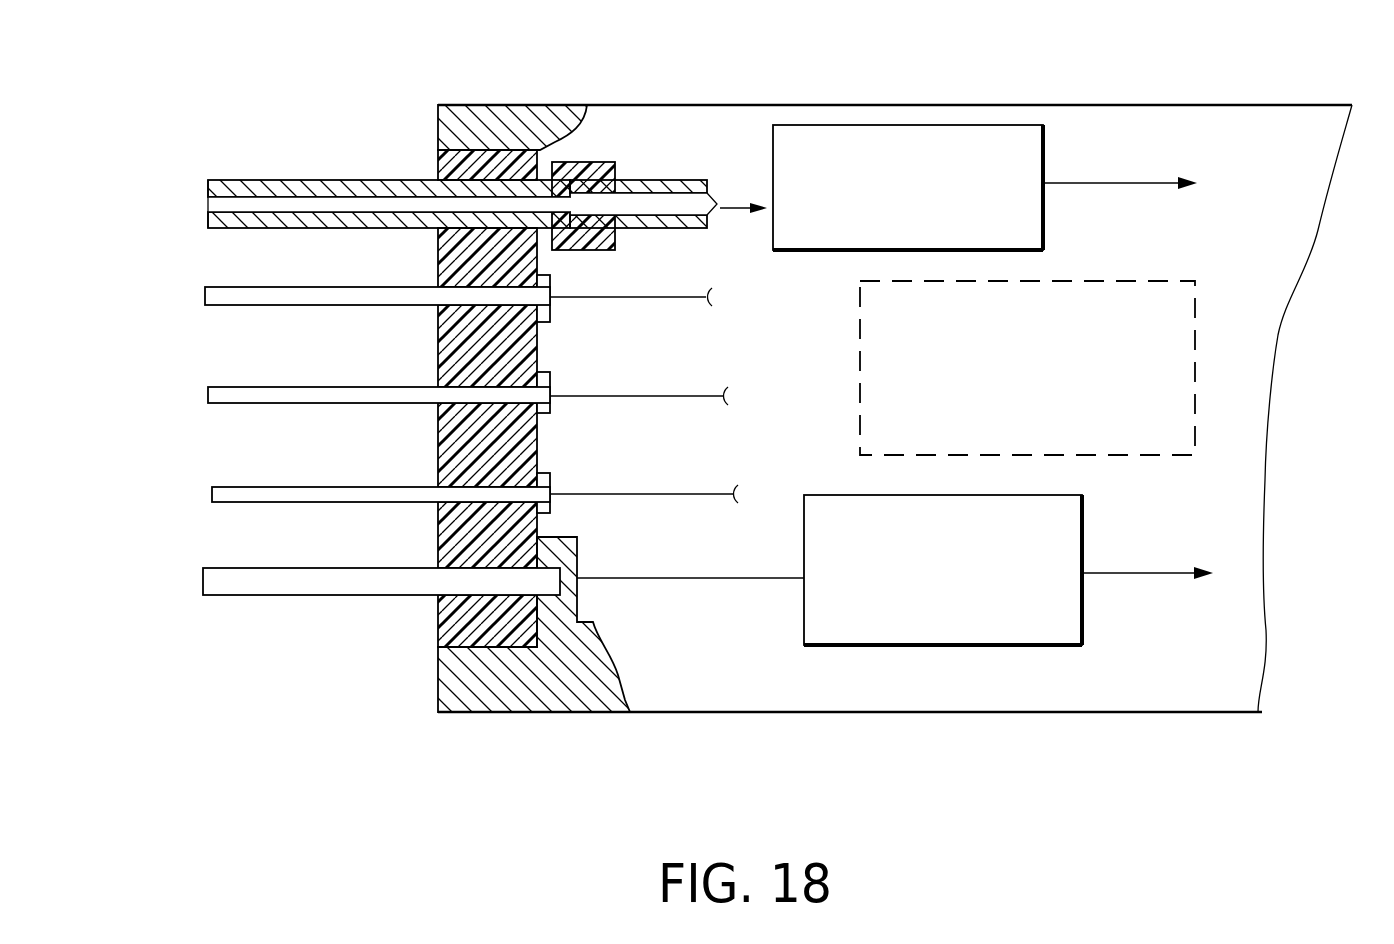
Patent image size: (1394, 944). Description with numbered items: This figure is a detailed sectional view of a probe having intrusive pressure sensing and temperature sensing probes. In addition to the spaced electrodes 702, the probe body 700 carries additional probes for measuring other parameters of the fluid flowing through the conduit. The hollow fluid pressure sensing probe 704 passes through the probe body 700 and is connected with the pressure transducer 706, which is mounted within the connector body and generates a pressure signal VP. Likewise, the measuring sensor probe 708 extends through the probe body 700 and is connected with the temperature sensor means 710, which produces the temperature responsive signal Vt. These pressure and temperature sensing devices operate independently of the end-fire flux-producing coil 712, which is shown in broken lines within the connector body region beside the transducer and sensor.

The probe body 700 is at (515, 110).
The spaced electrodes 702 is at (200, 296).
The hollow fluid pressure sensing probe 704 is at (283, 190).
The pressure transducer 706 is at (1002, 157).
The measuring sensor probe 708 is at (315, 577).
The temperature sensor means 710 is at (1012, 627).
The end-fire flux-producing coil 712 is at (1183, 372).